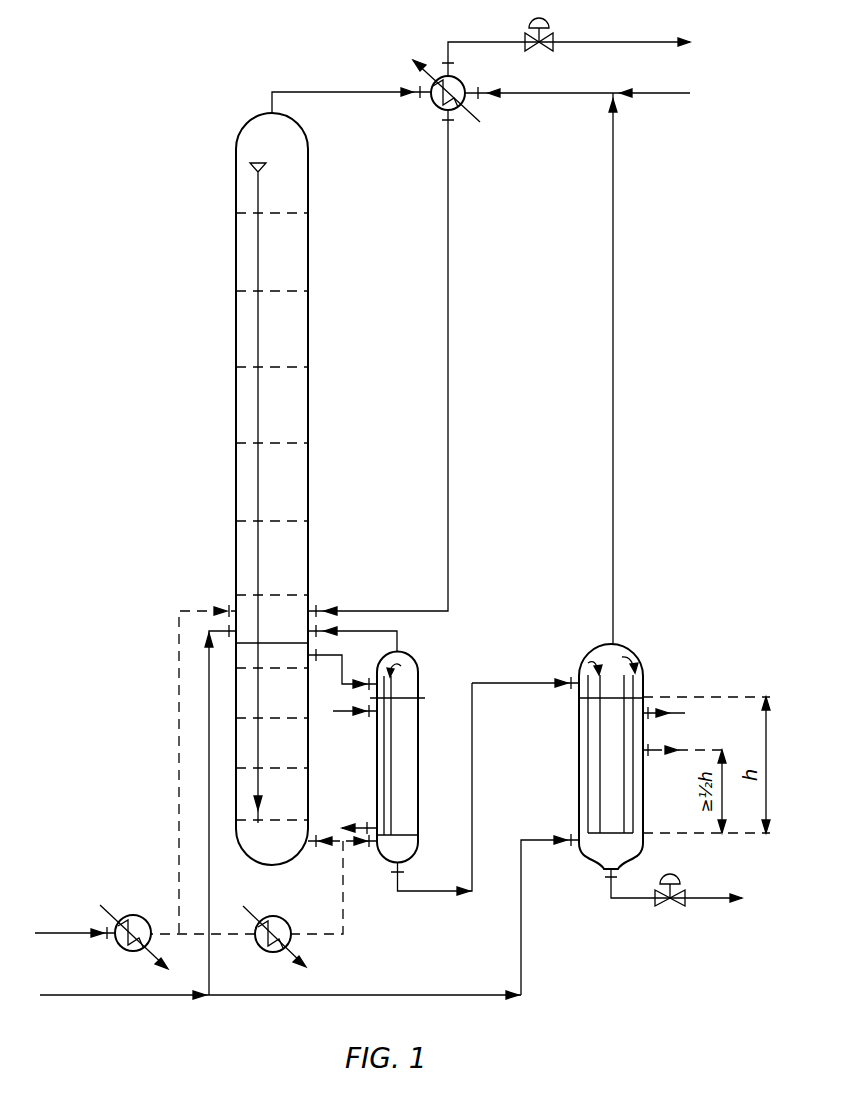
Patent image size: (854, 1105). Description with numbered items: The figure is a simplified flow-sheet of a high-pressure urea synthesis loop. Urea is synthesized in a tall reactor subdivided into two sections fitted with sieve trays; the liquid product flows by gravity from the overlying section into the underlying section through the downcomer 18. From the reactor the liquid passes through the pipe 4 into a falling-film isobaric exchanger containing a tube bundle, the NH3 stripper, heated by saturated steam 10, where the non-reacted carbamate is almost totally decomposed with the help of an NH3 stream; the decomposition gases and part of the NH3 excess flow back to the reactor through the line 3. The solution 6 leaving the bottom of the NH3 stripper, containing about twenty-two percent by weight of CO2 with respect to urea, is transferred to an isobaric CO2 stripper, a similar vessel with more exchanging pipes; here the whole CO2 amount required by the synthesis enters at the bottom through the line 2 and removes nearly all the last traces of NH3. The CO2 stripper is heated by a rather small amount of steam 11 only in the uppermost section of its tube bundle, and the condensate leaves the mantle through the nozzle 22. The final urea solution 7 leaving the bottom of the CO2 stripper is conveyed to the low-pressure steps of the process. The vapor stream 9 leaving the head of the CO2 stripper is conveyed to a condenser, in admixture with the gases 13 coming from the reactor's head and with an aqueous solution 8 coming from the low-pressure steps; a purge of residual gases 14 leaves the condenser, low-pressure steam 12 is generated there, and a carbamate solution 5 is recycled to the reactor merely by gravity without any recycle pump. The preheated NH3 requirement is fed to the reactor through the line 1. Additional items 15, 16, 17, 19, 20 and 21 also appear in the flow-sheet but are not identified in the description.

The ammonia feed line 1 is at (199, 769).
The carbon dioxide line 2 is at (550, 914).
The gas return line 3 is at (390, 760).
The pipe 4 is at (342, 669).
The carbamate solution 5 is at (387, 363).
The urea solution 6 is at (525, 673).
The final urea solution 7 is at (673, 887).
The aqueous solution 8 is at (577, 81).
The stripper head stream 9 is at (620, 368).
The saturated steam 10 is at (352, 722).
The steam 11 is at (676, 715).
The low-pressure steam 12 is at (446, 78).
The reactor head gases 13 is at (351, 88).
The residual gas purge 14 is at (566, 44).
The carbon dioxide feed line to column 15 is at (221, 810).
The carbon dioxide supply line 16 is at (277, 982).
The stripper outlet line 17 is at (359, 814).
The downcomer 18 is at (271, 493).
The liquid return line 19 is at (342, 855).
The ammonia heater 20 is at (141, 934).
The heater 21 is at (293, 904).
The nozzle 22 is at (682, 762).